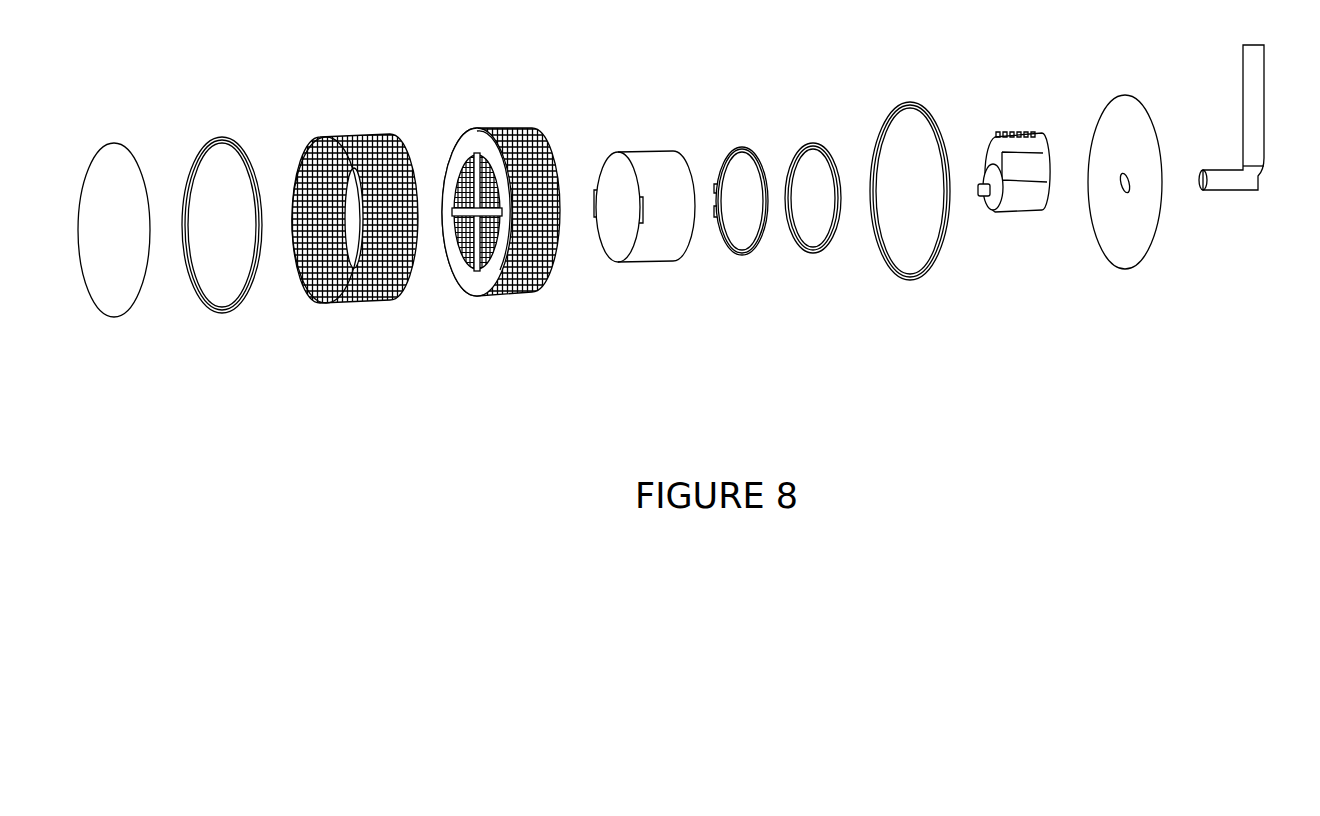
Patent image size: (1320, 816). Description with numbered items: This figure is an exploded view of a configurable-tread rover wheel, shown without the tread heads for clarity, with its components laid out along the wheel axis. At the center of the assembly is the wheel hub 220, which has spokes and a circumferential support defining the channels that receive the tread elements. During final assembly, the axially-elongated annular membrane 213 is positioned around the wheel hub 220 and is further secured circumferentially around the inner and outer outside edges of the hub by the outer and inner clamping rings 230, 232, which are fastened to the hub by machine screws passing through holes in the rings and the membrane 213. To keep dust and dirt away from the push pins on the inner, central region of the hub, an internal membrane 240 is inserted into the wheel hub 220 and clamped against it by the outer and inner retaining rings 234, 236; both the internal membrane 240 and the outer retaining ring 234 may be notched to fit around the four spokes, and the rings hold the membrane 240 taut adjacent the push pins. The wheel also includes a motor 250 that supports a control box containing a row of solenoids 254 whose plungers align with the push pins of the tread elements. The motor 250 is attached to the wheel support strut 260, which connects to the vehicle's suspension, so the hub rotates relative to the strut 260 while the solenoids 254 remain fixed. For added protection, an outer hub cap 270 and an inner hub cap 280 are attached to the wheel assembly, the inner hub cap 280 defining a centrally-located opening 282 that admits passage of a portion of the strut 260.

The axially-elongated annular membrane 213 is at (385, 135).
The wheel hub 220 is at (500, 118).
The outer clamping ring 230 is at (240, 150).
The inner clamping ring 232 is at (922, 107).
The outer retaining ring 234 is at (757, 170).
The inner retaining ring 236 is at (818, 140).
The internal membrane 240 is at (640, 157).
The motor 250 is at (1021, 178).
The solenoids 254 is at (1007, 120).
The wheel support strut 260 is at (1233, 182).
The outer hub cap 270 is at (107, 167).
The inner hub cap 280 is at (1142, 161).
The centrally-located opening 282 is at (1128, 180).